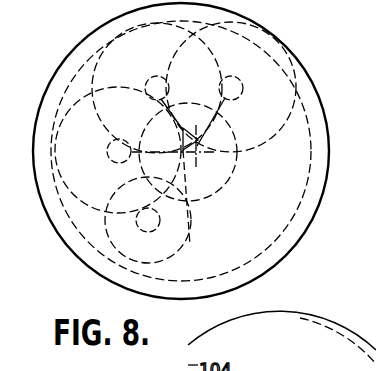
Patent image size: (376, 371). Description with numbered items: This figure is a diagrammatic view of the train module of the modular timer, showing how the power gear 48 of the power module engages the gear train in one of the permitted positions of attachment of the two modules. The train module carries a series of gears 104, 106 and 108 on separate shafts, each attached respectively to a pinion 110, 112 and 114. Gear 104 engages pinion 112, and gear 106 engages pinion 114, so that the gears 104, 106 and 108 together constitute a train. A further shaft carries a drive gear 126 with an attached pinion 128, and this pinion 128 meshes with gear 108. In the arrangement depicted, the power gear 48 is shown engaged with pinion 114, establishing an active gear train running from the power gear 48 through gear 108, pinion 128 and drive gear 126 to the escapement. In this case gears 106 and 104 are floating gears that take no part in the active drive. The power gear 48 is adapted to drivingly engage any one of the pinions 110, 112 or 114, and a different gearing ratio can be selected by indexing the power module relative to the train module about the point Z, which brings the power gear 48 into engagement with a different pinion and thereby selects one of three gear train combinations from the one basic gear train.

The power gear 48 is at (221, 186).
The gear 104 is at (266, 140).
The gear 106 is at (100, 55).
The gear 108 is at (87, 207).
The pinion 110 is at (239, 79).
The pinion 112 is at (148, 82).
The pinion 114 is at (110, 160).
The drive gear 126 is at (180, 246).
The pinion 128 is at (159, 228).
The point Z is at (197, 153).